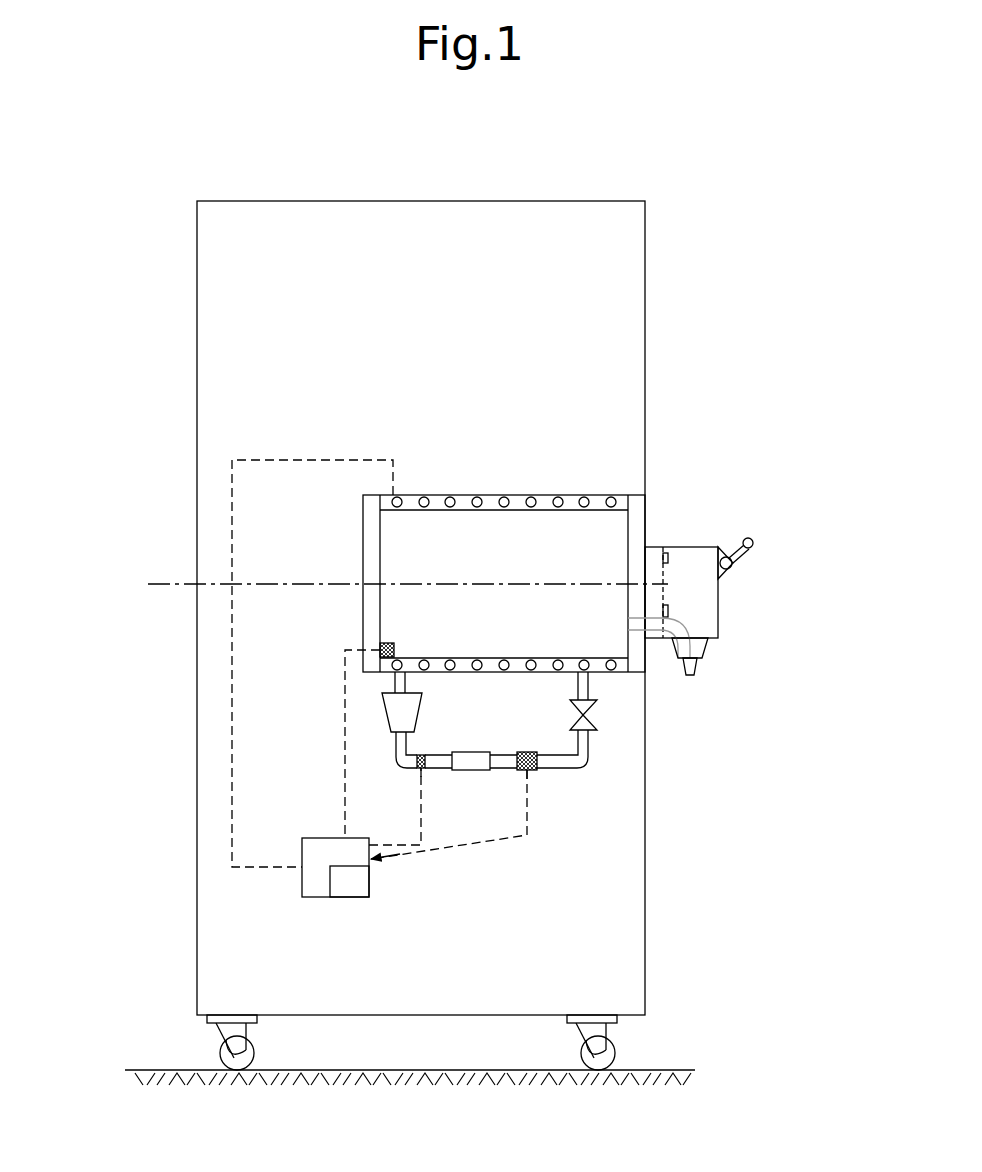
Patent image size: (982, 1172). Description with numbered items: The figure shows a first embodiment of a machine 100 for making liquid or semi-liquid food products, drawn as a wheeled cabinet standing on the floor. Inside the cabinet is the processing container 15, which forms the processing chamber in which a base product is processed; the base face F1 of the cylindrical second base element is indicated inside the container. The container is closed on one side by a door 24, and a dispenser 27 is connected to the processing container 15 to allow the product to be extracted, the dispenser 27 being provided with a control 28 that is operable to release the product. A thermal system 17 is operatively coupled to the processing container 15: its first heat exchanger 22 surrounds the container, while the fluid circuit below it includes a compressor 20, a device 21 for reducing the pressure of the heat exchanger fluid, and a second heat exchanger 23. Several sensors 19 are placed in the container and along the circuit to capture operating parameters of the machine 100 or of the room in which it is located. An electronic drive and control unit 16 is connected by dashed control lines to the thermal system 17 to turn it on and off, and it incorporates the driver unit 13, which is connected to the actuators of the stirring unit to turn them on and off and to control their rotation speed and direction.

The machine 100 is at (150, 228).
The base face F1 is at (385, 556).
The driver unit 13 is at (362, 893).
The processing container 15 is at (553, 576).
The drive and control unit 16 is at (302, 838).
The thermal system 17 is at (620, 757).
The sensor 19 is at (402, 648).
The compressor 20 is at (378, 715).
The device for reducing the pressure of the heat exchanger fluid 21 is at (605, 713).
The first heat exchanger 22 is at (545, 492).
The second heat exchanger 23 is at (467, 778).
The door 24 is at (660, 515).
The dispenser 27 is at (742, 612).
The control 28 is at (758, 537).